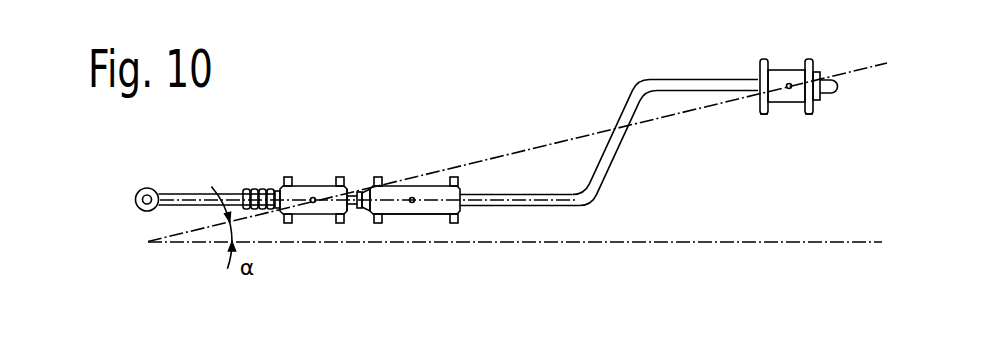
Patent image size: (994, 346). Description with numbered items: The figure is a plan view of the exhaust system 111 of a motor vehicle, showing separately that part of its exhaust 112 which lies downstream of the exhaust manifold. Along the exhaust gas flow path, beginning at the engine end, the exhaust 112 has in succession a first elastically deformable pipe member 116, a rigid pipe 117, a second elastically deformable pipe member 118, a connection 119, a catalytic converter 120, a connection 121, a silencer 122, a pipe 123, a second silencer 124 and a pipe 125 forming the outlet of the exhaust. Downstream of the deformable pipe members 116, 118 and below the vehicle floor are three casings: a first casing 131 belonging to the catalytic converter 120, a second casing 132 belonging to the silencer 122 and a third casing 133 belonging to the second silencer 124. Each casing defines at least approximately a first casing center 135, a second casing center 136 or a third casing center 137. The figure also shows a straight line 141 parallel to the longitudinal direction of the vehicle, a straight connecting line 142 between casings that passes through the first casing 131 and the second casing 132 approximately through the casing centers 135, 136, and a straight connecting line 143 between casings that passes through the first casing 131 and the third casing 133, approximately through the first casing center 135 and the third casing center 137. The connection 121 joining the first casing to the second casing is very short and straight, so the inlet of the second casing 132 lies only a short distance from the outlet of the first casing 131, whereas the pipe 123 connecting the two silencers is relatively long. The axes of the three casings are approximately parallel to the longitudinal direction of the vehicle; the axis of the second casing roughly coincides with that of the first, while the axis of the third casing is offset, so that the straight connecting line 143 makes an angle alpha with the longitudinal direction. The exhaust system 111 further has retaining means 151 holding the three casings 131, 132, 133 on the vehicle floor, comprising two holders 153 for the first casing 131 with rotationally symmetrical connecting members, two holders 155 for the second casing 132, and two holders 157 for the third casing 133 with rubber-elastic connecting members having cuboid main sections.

The exhaust system 111 is at (128, 189).
The exhaust 112 is at (128, 209).
The first elastically deformable pipe member 116 is at (148, 188).
The rigid pipe 117 is at (180, 194).
The second elastically deformable pipe member 118 is at (245, 189).
The connection 119 is at (278, 191).
The catalytic converter 120 is at (327, 186).
The connection 121 is at (359, 205).
The silencer 122 is at (428, 215).
The pipe 123 is at (596, 198).
The second silencer 124 is at (775, 66).
The pipe 125 is at (829, 94).
The first casing 131 is at (313, 185).
The second casing 132 is at (444, 217).
The third casing 133 is at (792, 69).
The first casing center 135 is at (314, 203).
The second casing center 136 is at (412, 203).
The third casing center 137 is at (790, 89).
The straight line 141 is at (697, 244).
The straight connecting line between casings 142 is at (497, 206).
The straight connecting line between casings 143 is at (570, 138).
The retaining means 151 is at (817, 60).
The holders 153 is at (340, 223).
The holders 155 is at (360, 192).
The holders 157 is at (765, 114).